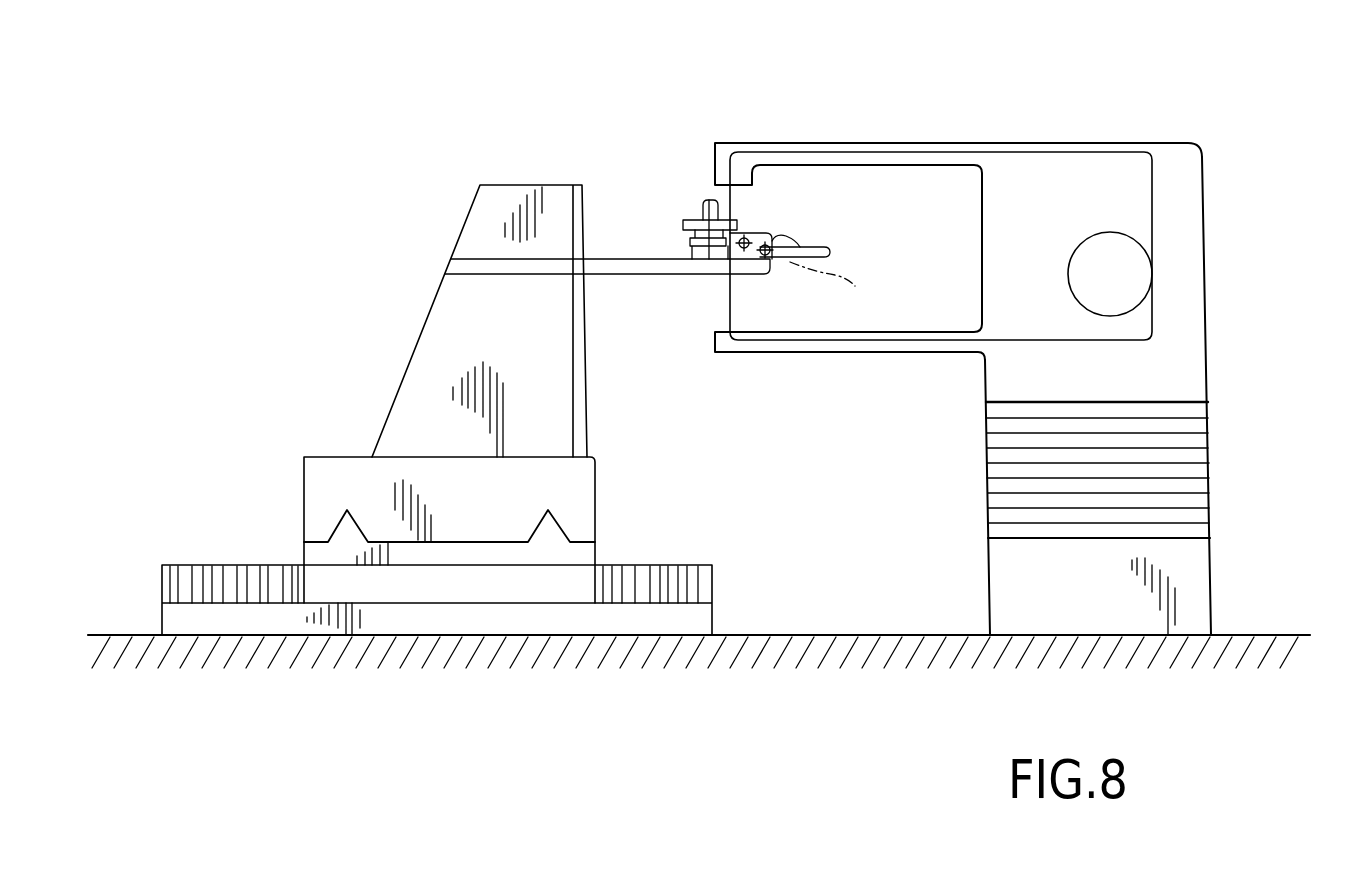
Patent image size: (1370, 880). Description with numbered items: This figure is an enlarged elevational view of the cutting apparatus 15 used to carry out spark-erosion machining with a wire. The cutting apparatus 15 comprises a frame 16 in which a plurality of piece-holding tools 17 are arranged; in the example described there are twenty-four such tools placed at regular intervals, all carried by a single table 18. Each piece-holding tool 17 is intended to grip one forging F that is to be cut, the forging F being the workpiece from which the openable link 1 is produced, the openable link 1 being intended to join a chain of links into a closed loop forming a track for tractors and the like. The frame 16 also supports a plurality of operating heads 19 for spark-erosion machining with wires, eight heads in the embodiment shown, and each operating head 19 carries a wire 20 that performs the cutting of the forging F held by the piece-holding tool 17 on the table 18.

The openable link 1 is at (815, 240).
The cutting apparatus 15 is at (372, 178).
The frame 16 is at (514, 620).
The piece-holding tool 17 is at (694, 205).
The table 18 is at (548, 395).
The operating head 19 is at (1184, 298).
The wire 20 is at (730, 300).
The forging F is at (830, 295).